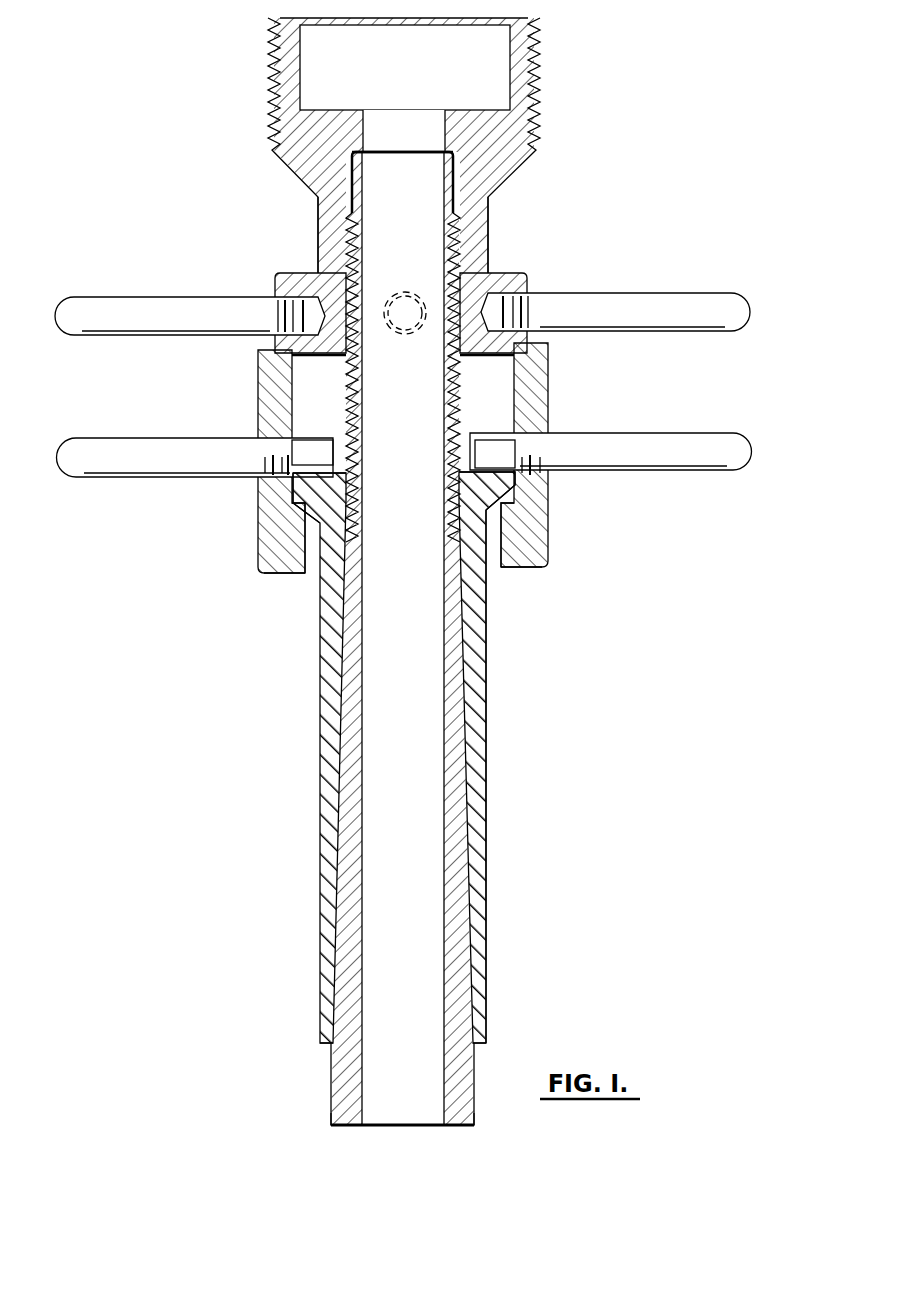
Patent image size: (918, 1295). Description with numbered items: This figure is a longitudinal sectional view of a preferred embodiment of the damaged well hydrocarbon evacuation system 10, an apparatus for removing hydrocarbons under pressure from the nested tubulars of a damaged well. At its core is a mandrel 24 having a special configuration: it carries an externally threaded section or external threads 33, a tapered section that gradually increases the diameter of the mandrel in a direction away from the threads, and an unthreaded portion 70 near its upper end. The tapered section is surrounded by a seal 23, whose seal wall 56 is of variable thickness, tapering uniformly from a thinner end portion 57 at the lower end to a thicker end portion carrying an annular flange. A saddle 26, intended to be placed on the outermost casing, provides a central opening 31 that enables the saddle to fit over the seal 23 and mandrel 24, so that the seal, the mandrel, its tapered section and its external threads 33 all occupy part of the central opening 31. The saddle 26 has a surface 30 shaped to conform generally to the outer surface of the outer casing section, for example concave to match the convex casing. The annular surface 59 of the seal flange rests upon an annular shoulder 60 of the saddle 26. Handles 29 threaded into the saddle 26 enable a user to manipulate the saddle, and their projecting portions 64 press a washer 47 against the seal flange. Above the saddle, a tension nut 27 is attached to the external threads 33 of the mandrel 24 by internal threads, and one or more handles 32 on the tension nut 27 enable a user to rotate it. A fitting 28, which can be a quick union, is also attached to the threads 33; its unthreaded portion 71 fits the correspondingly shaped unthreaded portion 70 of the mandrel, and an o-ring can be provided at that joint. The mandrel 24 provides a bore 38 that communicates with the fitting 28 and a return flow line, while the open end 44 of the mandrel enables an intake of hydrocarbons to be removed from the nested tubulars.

The damaged well hydrocarbon evacuation system 10 is at (617, 125).
The seal 23 is at (323, 745).
The mandrel 24 is at (330, 1113).
The saddle 26 is at (288, 555).
The tension nut 27 is at (513, 272).
The fitting 28 is at (297, 173).
The handles 29 is at (78, 462).
The surface 30 is at (293, 580).
The central opening 31 is at (297, 398).
The handles 32 is at (73, 320).
The external threads 33 is at (352, 218).
The bore 38 is at (393, 848).
The open end 44 is at (393, 1127).
The washer 47 is at (338, 427).
The seal wall 56 is at (487, 840).
The thinner end portion 57 is at (487, 1035).
The annular surface 59 is at (520, 497).
The annular shoulder 60 is at (300, 518).
The projecting portions 64 is at (310, 457).
The unthreaded portion 70 is at (450, 190).
The unthreaded portion 71 is at (490, 190).